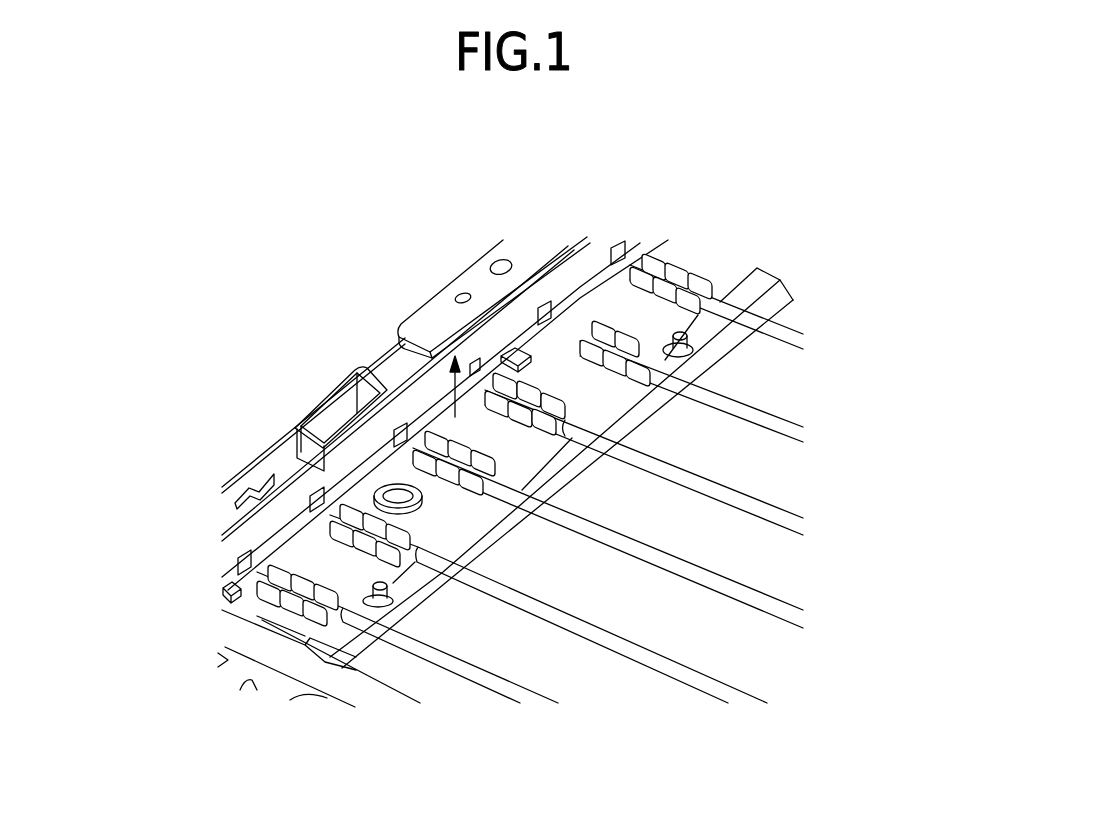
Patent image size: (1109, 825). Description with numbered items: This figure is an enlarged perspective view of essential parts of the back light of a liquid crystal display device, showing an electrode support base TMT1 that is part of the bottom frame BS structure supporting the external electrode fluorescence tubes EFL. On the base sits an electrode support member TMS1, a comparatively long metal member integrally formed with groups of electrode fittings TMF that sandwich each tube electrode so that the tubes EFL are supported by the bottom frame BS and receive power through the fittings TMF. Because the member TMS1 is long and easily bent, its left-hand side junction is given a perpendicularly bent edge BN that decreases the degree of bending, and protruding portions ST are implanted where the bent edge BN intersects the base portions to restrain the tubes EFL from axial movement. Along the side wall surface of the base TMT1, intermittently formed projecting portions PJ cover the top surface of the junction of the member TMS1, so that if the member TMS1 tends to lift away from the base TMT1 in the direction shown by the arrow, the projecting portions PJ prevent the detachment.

The bent edge BN is at (360, 470).
The protruding portions ST is at (400, 387).
The electrode support member TMS1 is at (747, 290).
The electrode fittings TMF is at (575, 320).
The projecting portions PJ is at (510, 352).
The electrode support base TMT1 is at (430, 602).
The external electrode fluorescence tubes EFL is at (743, 497).
The bottom frame BS is at (618, 680).